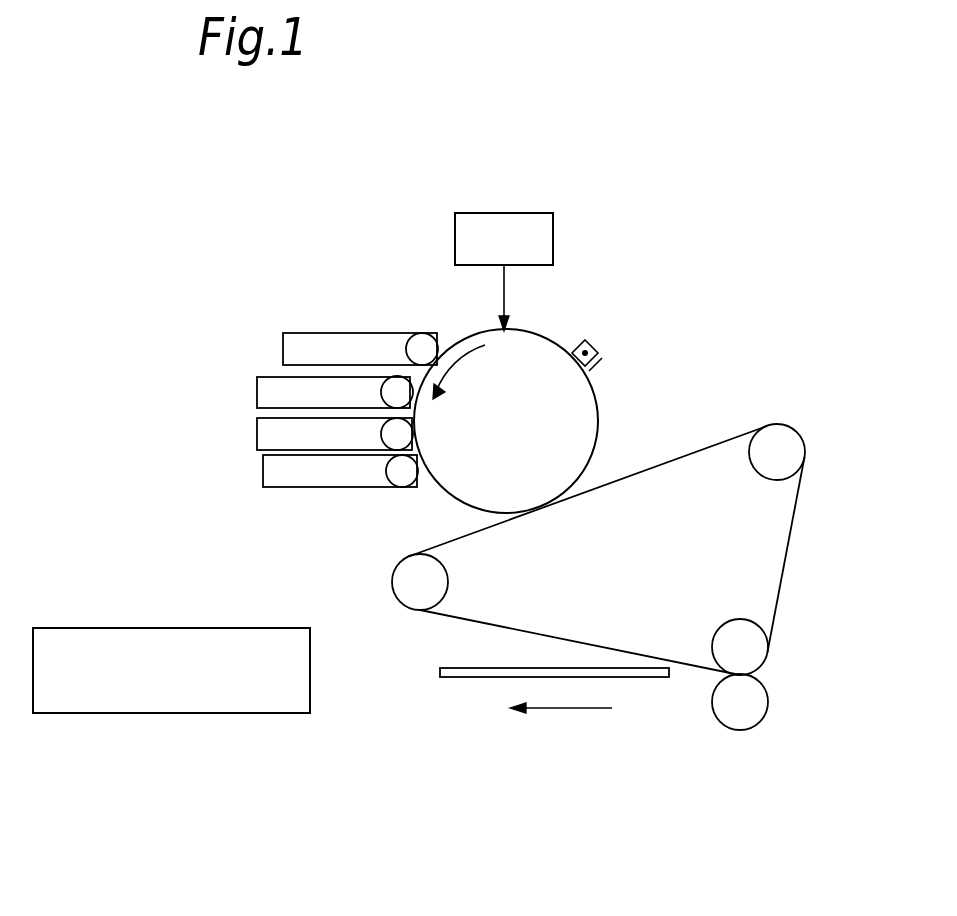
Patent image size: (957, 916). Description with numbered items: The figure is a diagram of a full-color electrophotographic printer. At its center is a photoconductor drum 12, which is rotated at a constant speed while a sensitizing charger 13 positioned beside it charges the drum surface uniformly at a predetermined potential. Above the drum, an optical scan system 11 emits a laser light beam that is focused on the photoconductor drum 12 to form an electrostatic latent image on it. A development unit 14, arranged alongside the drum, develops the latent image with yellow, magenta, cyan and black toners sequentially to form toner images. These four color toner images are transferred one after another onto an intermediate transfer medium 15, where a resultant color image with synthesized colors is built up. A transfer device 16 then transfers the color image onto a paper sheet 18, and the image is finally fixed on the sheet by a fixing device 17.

The optical scan system 11 is at (507, 213).
The photoconductor drum 12 is at (598, 415).
The sensitizing charger 13 is at (598, 343).
The development unit 14 is at (192, 415).
The intermediate transfer medium 15 is at (787, 552).
The transfer device 16 is at (740, 730).
The fixing device 17 is at (165, 713).
The paper sheet 18 is at (450, 677).